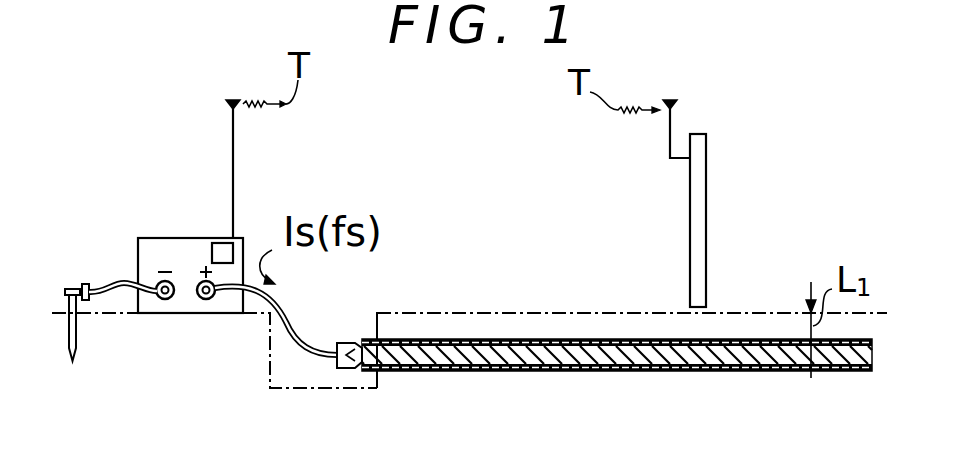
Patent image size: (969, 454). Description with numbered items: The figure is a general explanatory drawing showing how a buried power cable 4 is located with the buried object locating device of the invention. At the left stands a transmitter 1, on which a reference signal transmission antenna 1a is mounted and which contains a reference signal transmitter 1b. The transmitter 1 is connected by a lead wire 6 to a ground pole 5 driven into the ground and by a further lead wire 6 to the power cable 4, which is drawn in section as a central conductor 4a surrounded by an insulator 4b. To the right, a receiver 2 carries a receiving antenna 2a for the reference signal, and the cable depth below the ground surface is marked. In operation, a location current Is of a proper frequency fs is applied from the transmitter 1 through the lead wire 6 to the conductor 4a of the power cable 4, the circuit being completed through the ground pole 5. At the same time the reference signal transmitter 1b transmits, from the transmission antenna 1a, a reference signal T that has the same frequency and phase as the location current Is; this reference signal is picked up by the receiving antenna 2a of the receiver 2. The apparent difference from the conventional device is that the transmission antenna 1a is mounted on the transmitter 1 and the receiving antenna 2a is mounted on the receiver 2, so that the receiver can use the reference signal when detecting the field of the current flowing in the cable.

The transmitter 1 is at (172, 232).
The reference signal transmission antenna 1a is at (237, 108).
The reference signal transmitter 1b is at (221, 243).
The receiver 2 is at (716, 179).
The receiving antenna 2a is at (666, 110).
The power cable 4 is at (617, 396).
The conductor 4a is at (436, 360).
The insulator 4b is at (495, 368).
The ground pole 5 is at (83, 323).
The lead wire 6 is at (122, 286).